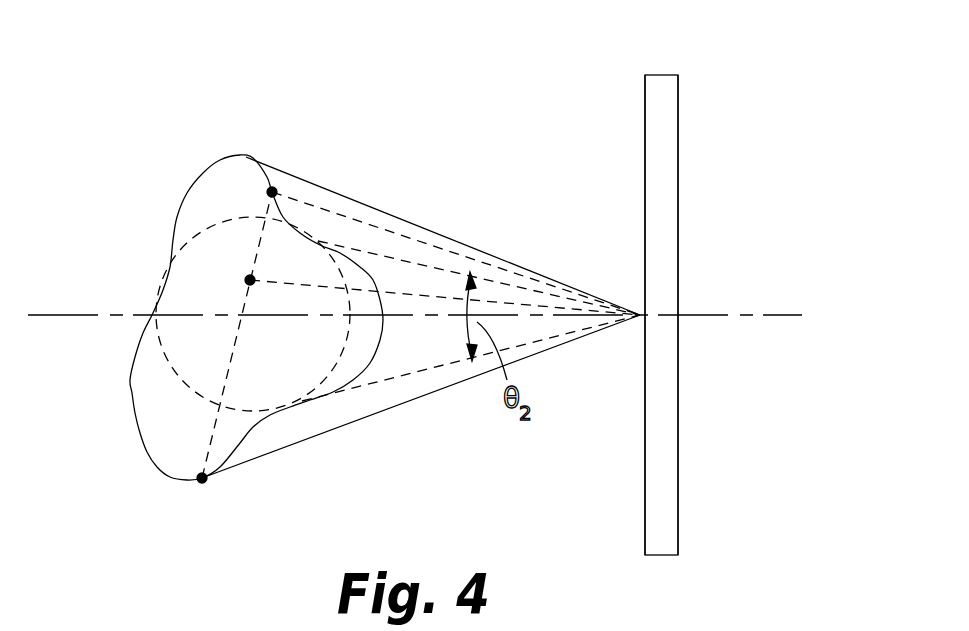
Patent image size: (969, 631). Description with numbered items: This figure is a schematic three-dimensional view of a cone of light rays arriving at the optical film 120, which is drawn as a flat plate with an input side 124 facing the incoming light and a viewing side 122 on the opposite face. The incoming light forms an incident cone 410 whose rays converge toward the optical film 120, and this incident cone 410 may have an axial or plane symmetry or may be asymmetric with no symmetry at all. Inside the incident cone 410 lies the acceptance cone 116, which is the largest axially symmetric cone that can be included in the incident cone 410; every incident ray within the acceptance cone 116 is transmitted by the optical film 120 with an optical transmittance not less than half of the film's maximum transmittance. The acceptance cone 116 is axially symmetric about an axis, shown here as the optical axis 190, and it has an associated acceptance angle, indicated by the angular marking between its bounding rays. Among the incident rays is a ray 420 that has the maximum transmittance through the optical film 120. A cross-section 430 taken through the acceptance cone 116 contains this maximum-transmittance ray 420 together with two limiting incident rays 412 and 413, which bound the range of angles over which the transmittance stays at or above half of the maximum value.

The acceptance cone 116 is at (402, 378).
The optical film 120 is at (658, 72).
The viewing side 122 is at (680, 110).
The input side 124 is at (643, 110).
The optical axis 190 is at (773, 313).
The incident cone 410 is at (275, 163).
The limiting incident ray 412 is at (313, 203).
The limiting incident ray 413 is at (197, 487).
The incident ray 420 is at (402, 293).
The cross-section 430 is at (212, 437).